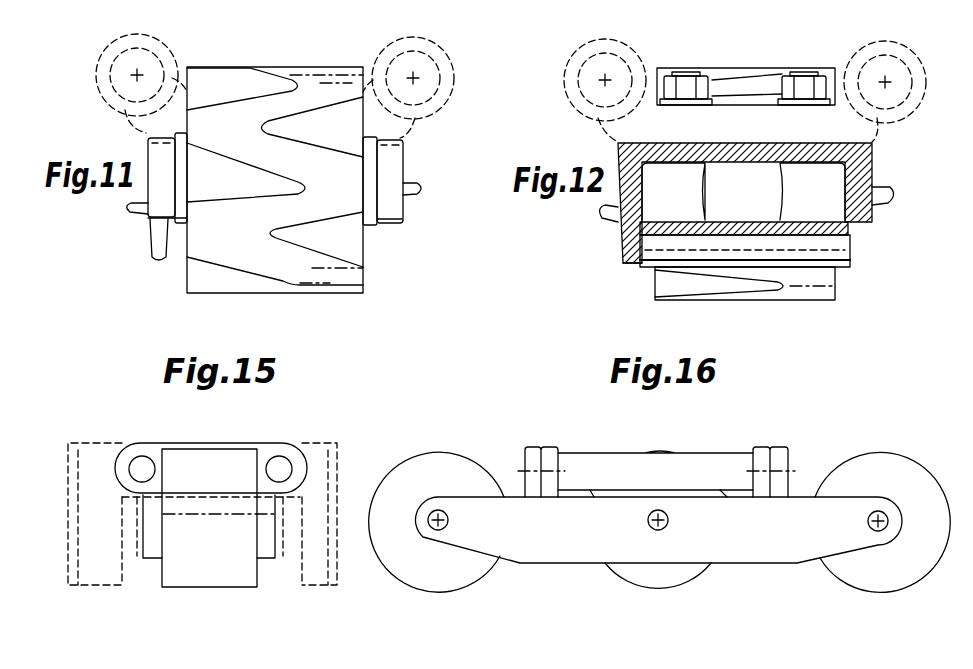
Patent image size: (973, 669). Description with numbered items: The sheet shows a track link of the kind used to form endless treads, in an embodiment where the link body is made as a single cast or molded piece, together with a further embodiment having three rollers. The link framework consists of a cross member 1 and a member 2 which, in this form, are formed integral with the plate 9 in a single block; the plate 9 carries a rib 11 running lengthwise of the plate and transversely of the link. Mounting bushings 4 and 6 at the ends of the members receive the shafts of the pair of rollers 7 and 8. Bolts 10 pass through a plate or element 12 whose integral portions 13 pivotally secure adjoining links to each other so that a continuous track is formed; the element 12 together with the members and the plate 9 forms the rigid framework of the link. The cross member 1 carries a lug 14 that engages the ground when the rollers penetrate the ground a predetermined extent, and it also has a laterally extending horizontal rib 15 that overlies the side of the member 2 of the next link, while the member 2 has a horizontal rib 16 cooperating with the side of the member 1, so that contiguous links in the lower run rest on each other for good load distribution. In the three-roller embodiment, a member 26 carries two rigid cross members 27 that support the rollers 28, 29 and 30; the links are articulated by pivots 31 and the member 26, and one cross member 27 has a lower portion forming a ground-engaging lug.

In FIG. 11, the cross member 1 is at (146, 234).
In FIG. 12, the cross member 1 is at (614, 228).
In FIG. 11, the member 2 is at (408, 165).
In FIG. 12, the member 2 is at (880, 212).
In FIG. 11, the mounting bushing 4 is at (155, 150).
In FIG. 11, the mounting bushing 6 is at (395, 222).
In FIG. 12, the roller 7 is at (740, 295).
In FIG. 11, the roller 8 is at (340, 290).
In FIG. 12, the plate 9 is at (822, 228).
In FIG. 12, the bolt 10 is at (803, 85).
In FIG. 12, the rib 11 is at (838, 262).
In FIG. 12, the element 12 is at (773, 120).
In FIG. 11, the integral portion 13 is at (105, 75).
In FIG. 12, the integral portion 13 is at (572, 90).
In FIG. 11, the lug 14 is at (149, 259).
In FIG. 12, the lug 14 is at (611, 293).
In FIG. 11, the horizontal rib 15 is at (130, 205).
In FIG. 12, the horizontal rib 15 is at (605, 212).
In FIG. 11, the horizontal rib 16 is at (415, 192).
In FIG. 12, the horizontal rib 16 is at (882, 200).
In FIG. 15, the member 26 is at (270, 453).
In FIG. 16, the member 26 is at (533, 455).
In FIG. 15, the cross member 27 is at (143, 503).
In FIG. 16, the cross member 27 is at (690, 515).
In FIG. 15, the roller 28 is at (197, 570).
In FIG. 16, the roller 28 is at (438, 462).
In FIG. 16, the roller 29 is at (650, 575).
In FIG. 16, the roller 30 is at (868, 462).
In FIG. 15, the pivot 31 is at (140, 465).
In FIG. 16, the pivot 31 is at (612, 465).